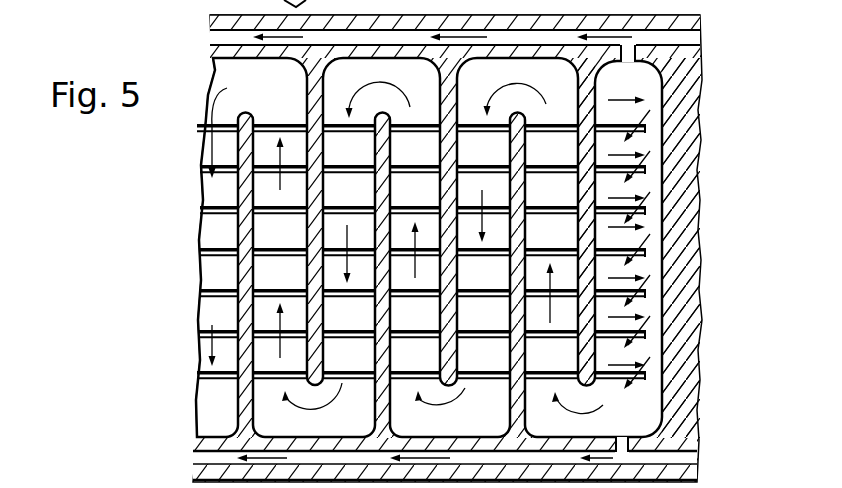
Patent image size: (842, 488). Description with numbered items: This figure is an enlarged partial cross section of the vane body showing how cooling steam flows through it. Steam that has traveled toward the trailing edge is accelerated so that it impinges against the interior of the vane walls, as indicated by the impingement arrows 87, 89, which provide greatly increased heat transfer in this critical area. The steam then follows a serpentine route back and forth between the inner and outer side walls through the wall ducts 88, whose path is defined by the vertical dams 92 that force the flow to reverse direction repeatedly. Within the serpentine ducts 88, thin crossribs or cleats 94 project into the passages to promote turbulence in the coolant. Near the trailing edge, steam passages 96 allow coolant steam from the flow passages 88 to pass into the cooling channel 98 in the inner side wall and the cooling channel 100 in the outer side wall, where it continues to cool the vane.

The impingement arrows 87 is at (640, 212).
The wall ducts 88 is at (648, 147).
The impingement arrows 89 is at (624, 240).
The vertical dams 92 is at (588, 276).
The crossribs (cleats) 94 is at (555, 126).
The steam passages 96 is at (628, 68).
The cooling channel 98 is at (690, 463).
The cooling channel 100 is at (688, 40).